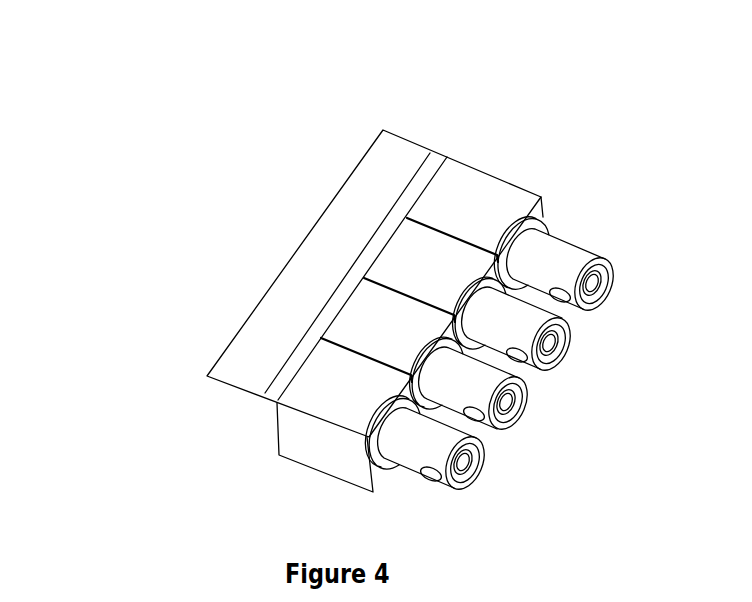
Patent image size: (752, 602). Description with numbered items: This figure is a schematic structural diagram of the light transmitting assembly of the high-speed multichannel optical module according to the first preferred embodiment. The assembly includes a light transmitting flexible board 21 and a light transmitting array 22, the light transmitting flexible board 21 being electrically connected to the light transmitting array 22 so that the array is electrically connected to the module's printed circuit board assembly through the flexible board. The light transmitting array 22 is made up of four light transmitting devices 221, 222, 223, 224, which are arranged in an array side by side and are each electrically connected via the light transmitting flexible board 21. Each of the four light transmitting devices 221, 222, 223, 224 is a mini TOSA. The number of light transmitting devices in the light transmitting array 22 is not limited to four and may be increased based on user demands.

The light transmitting flexible board 21 is at (337, 256).
The light transmitting array 22 is at (337, 277).
The light transmitting device 221 is at (473, 200).
The light transmitting device 222 is at (430, 263).
The light transmitting device 223 is at (378, 327).
The light transmitting device 224 is at (333, 387).